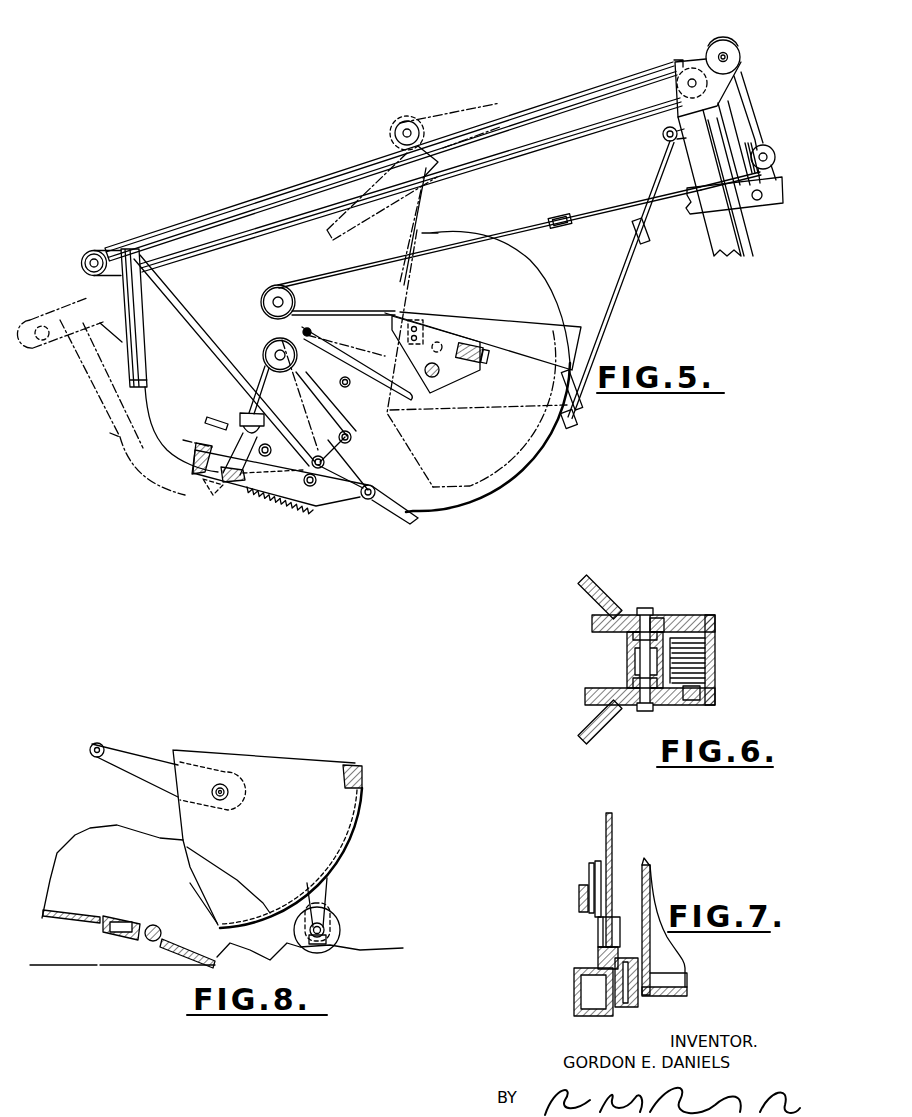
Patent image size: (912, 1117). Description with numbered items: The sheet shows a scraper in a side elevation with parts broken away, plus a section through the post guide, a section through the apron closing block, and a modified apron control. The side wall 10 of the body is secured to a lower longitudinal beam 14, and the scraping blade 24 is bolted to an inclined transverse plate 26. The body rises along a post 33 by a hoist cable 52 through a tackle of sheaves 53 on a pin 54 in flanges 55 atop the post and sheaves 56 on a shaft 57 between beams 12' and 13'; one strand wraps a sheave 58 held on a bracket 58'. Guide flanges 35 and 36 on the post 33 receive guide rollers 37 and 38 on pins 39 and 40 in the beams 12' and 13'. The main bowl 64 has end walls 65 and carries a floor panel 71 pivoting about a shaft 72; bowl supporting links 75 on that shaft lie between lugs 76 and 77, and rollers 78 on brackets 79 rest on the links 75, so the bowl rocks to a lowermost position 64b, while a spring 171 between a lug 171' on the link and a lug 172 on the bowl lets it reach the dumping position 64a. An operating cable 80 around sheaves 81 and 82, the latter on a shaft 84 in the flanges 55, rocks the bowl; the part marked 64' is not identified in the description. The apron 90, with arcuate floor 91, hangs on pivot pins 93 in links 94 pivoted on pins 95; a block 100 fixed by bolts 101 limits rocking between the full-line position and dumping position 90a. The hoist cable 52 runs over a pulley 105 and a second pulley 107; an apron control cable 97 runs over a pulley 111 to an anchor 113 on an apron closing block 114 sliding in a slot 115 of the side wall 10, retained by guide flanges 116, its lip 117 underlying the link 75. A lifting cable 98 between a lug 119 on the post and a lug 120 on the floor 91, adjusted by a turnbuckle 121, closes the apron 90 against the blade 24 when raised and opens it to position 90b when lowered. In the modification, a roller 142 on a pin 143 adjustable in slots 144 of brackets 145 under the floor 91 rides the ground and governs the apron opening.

In FIG. 7, the side wall 10 is at (606, 833).
In FIG. 5, the beam 12' is at (737, 164).
In FIG. 6, the beam 12' is at (625, 679).
In FIG. 6, the beam 13' is at (625, 603).
In FIG. 7, the lower longitudinally extending beam 14 is at (575, 990).
In FIG. 5, the scraping blade 24 is at (413, 529).
In FIG. 8, the scraping blade 24 is at (217, 963).
In FIG. 8, the transversely extending plate 26 is at (163, 942).
In FIG. 5, the post 33 is at (717, 247).
In FIG. 6, the post 33 is at (630, 653).
In FIG. 6, the guide flange 35 is at (640, 609).
In FIG. 6, the guide flange 36 is at (662, 619).
In FIG. 6, the guide roller 37 is at (638, 637).
In FIG. 6, the guide roller 38 is at (634, 680).
In FIG. 6, the pin 39 is at (652, 612).
In FIG. 6, the pin 40 is at (643, 711).
In FIG. 5, the hoist cable 52 is at (611, 205).
In FIG. 5, the sheaves 53 is at (731, 47).
In FIG. 5, the pin 54 is at (740, 56).
In FIG. 5, the flanges 55 is at (697, 55).
In FIG. 6, the sheaves 56 is at (707, 670).
In FIG. 6, the shaft 57 is at (693, 700).
In FIG. 5, the sheave 58 is at (770, 153).
In FIG. 5, the bracket 58' is at (712, 181).
In FIG. 5, the main bowl 64 is at (117, 396).
In FIG. 7, the main bowl 64 is at (667, 926).
In FIG. 8, the main bowl 64 is at (71, 877).
In FIG. 5, the bucket bracket 64' is at (156, 318).
In FIG. 5, the dumping position of the bowl 64a is at (420, 218).
In FIG. 5, the lowermost position of the bowl 64b is at (173, 488).
In FIG. 5, the end walls 65 is at (190, 346).
In FIG. 8, the floor panel 71 is at (128, 921).
In FIG. 5, the shaft 72 is at (373, 488).
In FIG. 5, the bowl supporting links 75 is at (343, 503).
In FIG. 7, the bowl supporting links 75 is at (687, 975).
In FIG. 5, the lower lug 76 is at (197, 480).
In FIG. 5, the upper lug 77 is at (227, 420).
In FIG. 5, the rollers 78 is at (272, 413).
In FIG. 5, the brackets 79 is at (287, 439).
In FIG. 5, the operating cable 80 is at (572, 97).
In FIG. 5, the sheaves 81 is at (90, 251).
In FIG. 5, the sheaves 82 is at (682, 63).
In FIG. 5, the shaft 84 is at (82, 271).
In FIG. 5, the apron 90 is at (535, 479).
In FIG. 8, the apron 90 is at (364, 793).
In FIG. 5, the dumping position of the apron 90a is at (530, 274).
In FIG. 5, the digging position of the apron 90b is at (565, 320).
In FIG. 8, the arcuate shaped floor section 91 is at (358, 824).
In FIG. 5, the pivotal pins 93 is at (438, 362).
In FIG. 5, the links 94 is at (462, 374).
In FIG. 8, the links 94 is at (143, 757).
In FIG. 5, the pins 95 is at (300, 332).
In FIG. 5, the apron control cable 97 is at (264, 379).
In FIG. 7, the apron control cable 97 is at (589, 872).
In FIG. 5, the lifting cable 98 is at (602, 328).
In FIG. 5, the block 100 is at (484, 348).
In FIG. 5, the bolts 101 is at (490, 361).
In FIG. 5, the pulley 105 is at (266, 287).
In FIG. 5, the second pulley 107 is at (558, 215).
In FIG. 5, the pulley 111 is at (264, 352).
In FIG. 7, the anchor 113 is at (579, 898).
In FIG. 7, the apron closing block 114 is at (598, 955).
In FIG. 7, the slot 115 is at (600, 862).
In FIG. 7, the guide flanges 116 is at (598, 926).
In FIG. 7, the lip 117 is at (623, 1007).
In FIG. 5, the lug 119 is at (663, 134).
In FIG. 5, the lug 120 is at (567, 426).
In FIG. 5, the adjusting turnbuckle 121 is at (644, 236).
In FIG. 8, the roller 142 is at (340, 930).
In FIG. 8, the pin 143 is at (324, 920).
In FIG. 8, the elongated slots 144 is at (328, 907).
In FIG. 8, the brackets 145 is at (338, 883).
In FIG. 5, the spring 171 is at (267, 515).
In FIG. 5, the lug 171' is at (301, 527).
In FIG. 5, the lug 172 is at (248, 487).